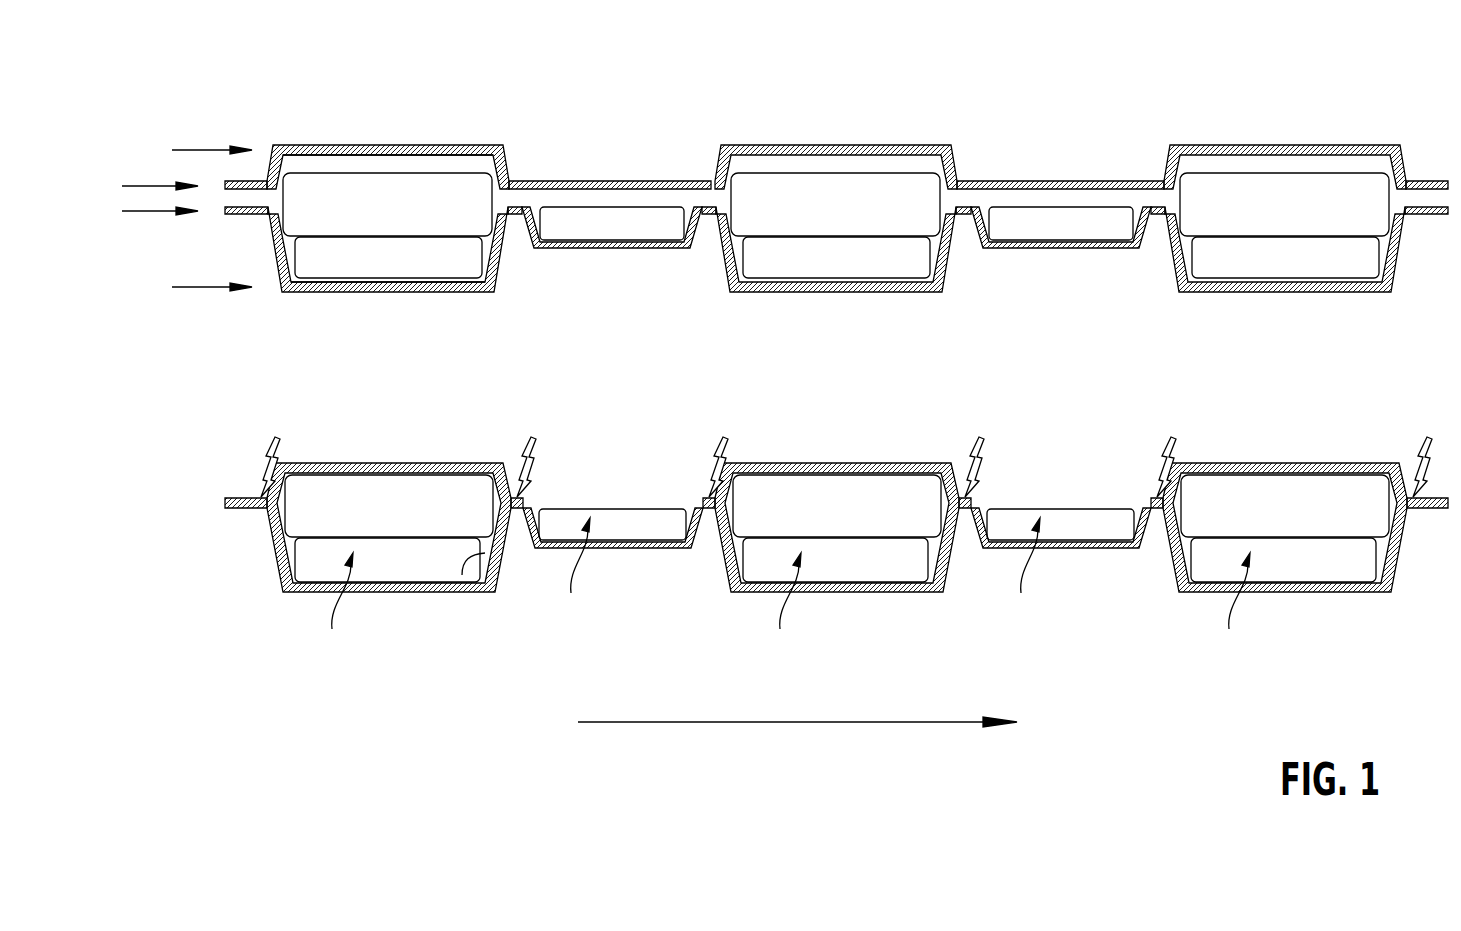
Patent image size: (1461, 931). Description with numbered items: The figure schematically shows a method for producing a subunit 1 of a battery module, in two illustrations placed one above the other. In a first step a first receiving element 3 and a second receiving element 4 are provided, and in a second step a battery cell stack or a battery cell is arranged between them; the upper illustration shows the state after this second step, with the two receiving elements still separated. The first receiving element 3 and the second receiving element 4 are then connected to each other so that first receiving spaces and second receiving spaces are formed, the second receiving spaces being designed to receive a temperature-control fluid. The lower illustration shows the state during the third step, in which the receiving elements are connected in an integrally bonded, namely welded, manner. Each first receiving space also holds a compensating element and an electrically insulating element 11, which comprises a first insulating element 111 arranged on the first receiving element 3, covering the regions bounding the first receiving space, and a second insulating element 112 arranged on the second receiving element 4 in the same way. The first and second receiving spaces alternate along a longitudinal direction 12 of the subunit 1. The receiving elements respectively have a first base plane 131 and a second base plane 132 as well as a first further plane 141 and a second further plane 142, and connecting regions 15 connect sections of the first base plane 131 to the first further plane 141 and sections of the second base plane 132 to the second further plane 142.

The subunit 1 is at (246, 631).
The first receiving element 3 is at (318, 292).
The second receiving element 4 is at (318, 145).
The insulating element 11 is at (462, 575).
The longitudinal direction 12 is at (780, 723).
The connecting regions 15 is at (718, 168).
The first insulating element 111 is at (385, 282).
The second insulating element 112 is at (385, 155).
The first base plane 131 is at (143, 214).
The second base plane 132 is at (143, 183).
The first further plane 141 is at (202, 289).
The second further plane 142 is at (203, 148).